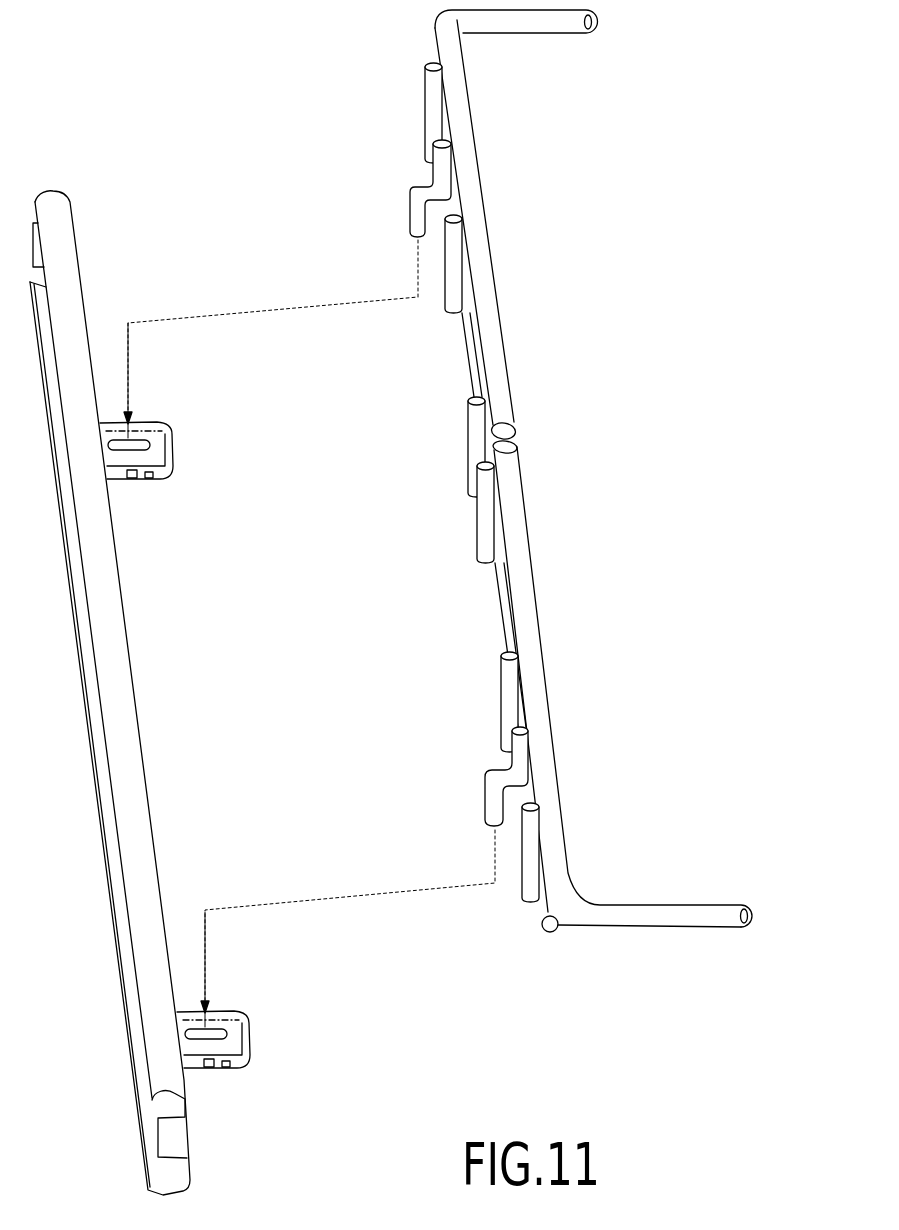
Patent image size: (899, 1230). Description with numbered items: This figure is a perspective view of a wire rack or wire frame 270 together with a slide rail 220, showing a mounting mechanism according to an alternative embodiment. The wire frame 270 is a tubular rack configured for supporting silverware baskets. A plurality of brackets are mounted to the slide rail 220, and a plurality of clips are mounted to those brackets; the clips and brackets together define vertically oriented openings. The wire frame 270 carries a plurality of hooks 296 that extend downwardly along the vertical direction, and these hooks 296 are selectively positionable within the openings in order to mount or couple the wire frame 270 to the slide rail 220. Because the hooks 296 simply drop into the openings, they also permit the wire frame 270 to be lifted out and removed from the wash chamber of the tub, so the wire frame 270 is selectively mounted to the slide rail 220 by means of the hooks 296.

The slide rail 220 is at (123, 706).
The wire frame 270 is at (578, 35).
The hook 296 is at (408, 226).